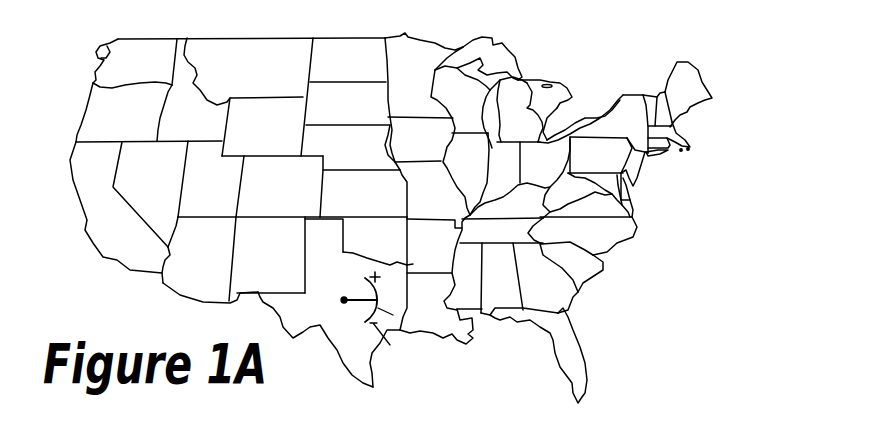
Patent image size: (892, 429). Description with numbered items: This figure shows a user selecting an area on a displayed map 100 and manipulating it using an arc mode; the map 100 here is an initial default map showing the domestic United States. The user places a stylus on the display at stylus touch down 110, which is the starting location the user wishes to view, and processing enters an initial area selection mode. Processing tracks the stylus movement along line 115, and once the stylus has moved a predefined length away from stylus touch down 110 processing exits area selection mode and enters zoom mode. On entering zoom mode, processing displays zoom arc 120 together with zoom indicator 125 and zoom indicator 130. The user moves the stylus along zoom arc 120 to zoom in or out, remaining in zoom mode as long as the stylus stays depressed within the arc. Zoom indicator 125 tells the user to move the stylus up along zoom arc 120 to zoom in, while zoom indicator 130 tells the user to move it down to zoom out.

The map 100 is at (695, 210).
The stylus touch down 110 is at (340, 302).
The line 115 is at (362, 292).
The zoom arc 120 is at (393, 315).
The zoom indicator 125 is at (413, 264).
The zoom indicator 130 is at (390, 346).